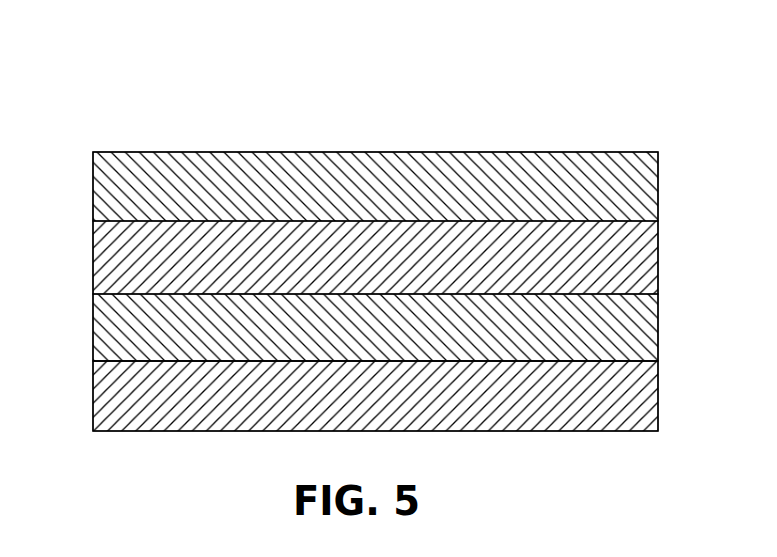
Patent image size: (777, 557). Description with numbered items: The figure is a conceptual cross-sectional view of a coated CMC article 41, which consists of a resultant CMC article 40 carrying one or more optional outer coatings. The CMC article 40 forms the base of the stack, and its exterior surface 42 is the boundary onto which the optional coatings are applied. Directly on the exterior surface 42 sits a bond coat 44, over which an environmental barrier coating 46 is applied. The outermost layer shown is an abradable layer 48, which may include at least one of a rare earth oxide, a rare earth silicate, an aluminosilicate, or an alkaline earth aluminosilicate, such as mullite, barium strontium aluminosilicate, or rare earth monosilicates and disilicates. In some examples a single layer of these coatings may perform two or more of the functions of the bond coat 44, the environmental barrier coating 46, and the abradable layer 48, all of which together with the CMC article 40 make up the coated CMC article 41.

The coated CMC article 41 is at (104, 78).
The abradable layer 48 is at (103, 192).
The environmental barrier coating 46 is at (103, 266).
The bond coat 44 is at (103, 324).
The exterior surface 42 is at (627, 344).
The CMC article 40 is at (656, 408).